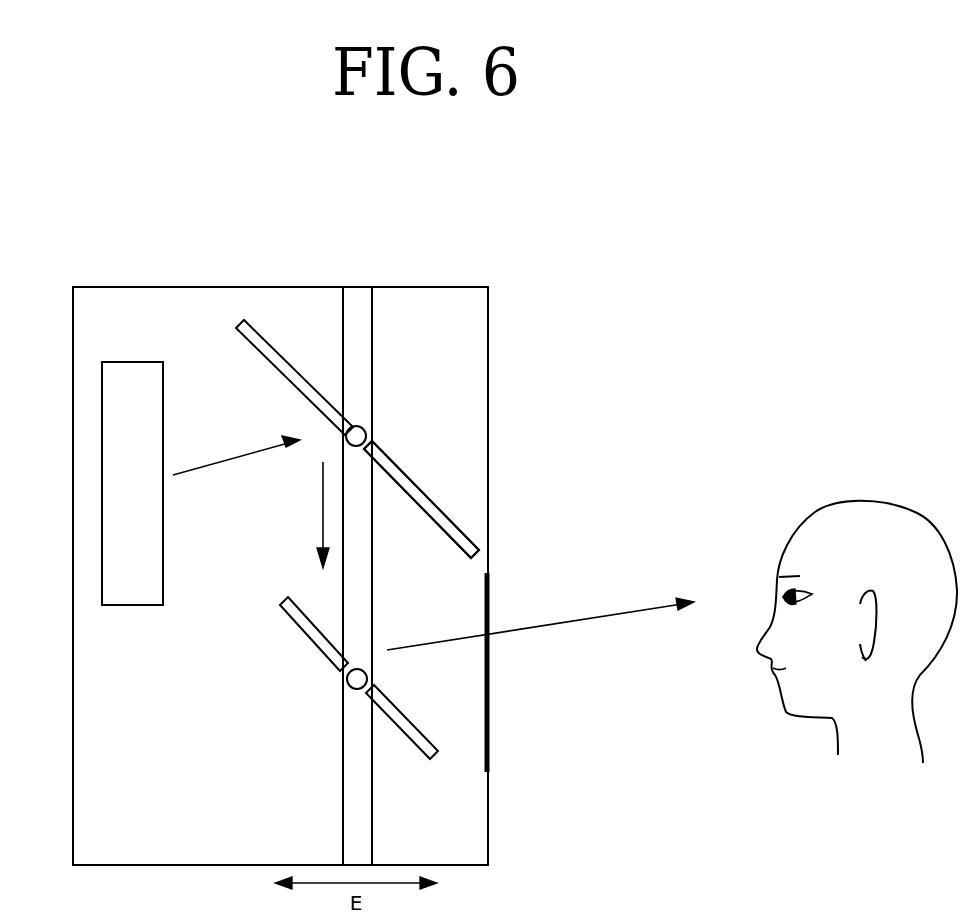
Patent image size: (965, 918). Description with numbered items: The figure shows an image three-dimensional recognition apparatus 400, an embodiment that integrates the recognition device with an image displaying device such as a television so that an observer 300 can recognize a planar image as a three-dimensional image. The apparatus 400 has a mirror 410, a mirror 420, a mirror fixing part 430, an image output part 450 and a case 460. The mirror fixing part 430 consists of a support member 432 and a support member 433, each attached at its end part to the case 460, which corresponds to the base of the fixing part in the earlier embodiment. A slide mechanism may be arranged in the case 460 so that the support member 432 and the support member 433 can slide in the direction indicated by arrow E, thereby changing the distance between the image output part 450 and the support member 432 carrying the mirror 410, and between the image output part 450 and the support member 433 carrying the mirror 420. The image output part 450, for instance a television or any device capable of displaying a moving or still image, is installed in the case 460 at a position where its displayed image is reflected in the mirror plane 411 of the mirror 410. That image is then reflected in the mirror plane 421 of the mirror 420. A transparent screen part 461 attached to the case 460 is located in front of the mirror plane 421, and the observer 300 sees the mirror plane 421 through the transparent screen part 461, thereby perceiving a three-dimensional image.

The observer 300 is at (857, 501).
The image three-dimensional recognition apparatus 400 is at (558, 238).
The mirror 410 is at (258, 330).
The mirror plane 411 is at (270, 362).
The mirror 420 is at (310, 640).
The mirror plane 421 is at (389, 707).
The mirror fixing part 430 is at (398, 380).
The support member 432 is at (368, 431).
The support member 433 is at (421, 499).
The image output part 450 is at (121, 362).
The case 460 is at (489, 400).
The transparent screen part 461 is at (489, 597).